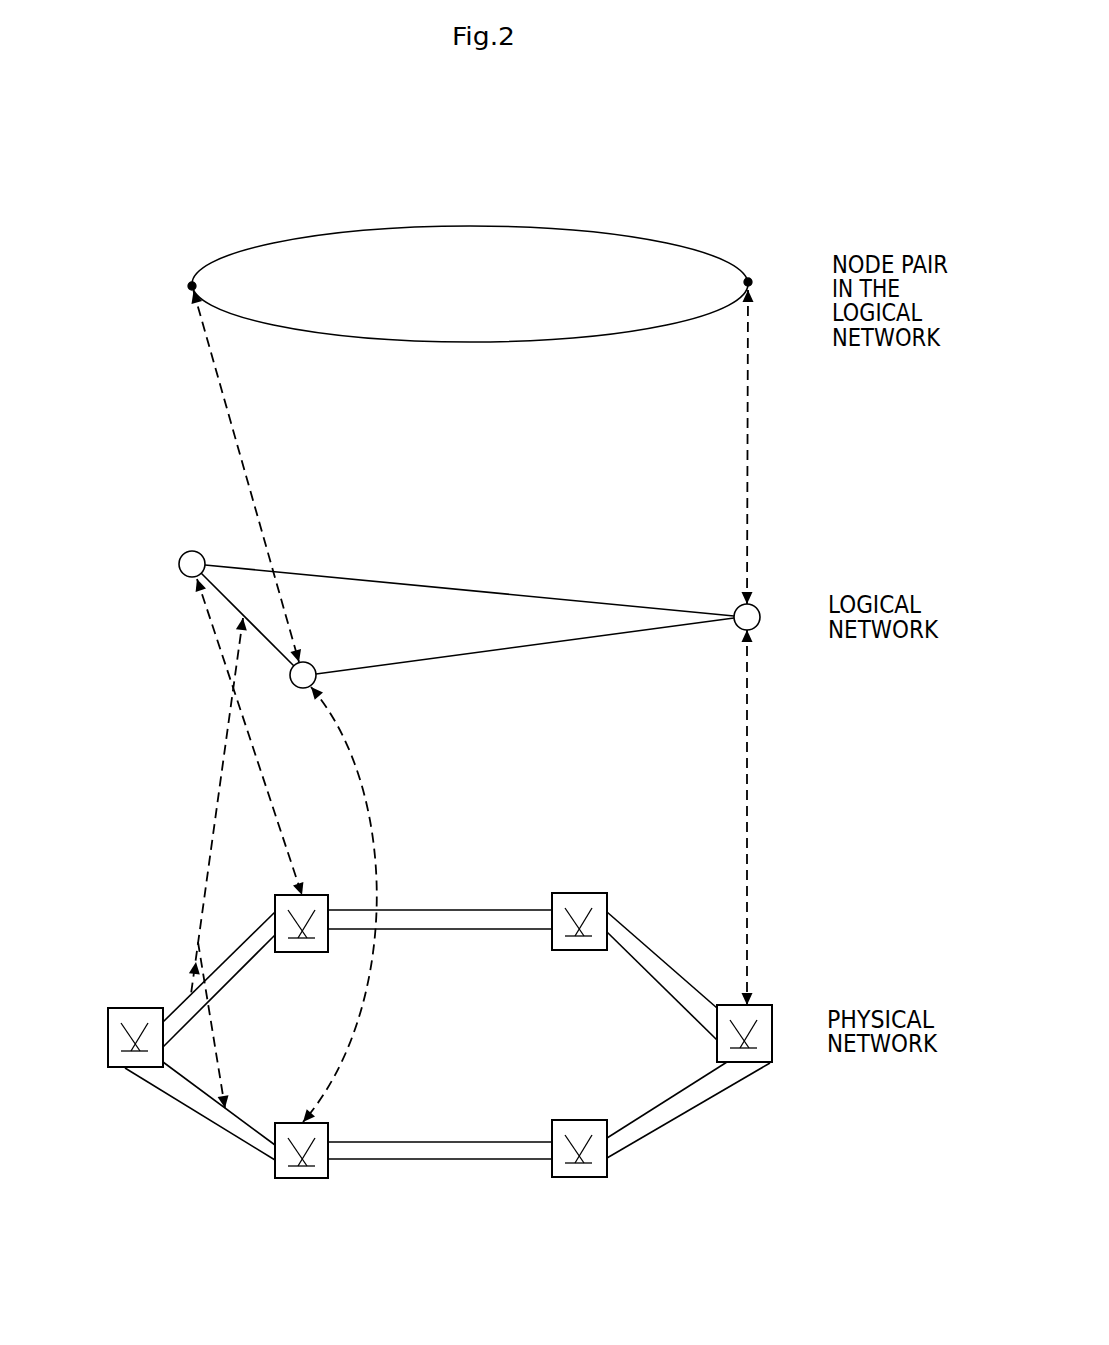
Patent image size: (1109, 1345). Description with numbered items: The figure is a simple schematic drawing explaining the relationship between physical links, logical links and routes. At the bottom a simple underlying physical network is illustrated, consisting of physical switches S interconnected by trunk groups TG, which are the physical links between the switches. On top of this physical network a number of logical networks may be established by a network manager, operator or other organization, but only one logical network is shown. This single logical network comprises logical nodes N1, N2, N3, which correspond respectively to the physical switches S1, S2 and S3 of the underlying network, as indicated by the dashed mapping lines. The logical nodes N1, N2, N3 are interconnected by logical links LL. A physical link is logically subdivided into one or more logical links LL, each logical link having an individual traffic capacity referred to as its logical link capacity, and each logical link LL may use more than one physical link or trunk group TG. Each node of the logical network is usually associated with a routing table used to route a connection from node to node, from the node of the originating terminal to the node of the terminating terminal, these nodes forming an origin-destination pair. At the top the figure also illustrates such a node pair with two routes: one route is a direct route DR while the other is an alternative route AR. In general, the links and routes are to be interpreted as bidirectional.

The alternative route AR is at (453, 227).
The direct route DR is at (463, 343).
The logical links LL is at (230, 605).
The logical node N1 is at (187, 552).
The logical node N2 is at (317, 680).
The logical node N3 is at (738, 627).
The trunk groups TG is at (498, 908).
The physical switch S1 is at (285, 895).
The physical switch S2 is at (275, 1167).
The physical switch S3 is at (770, 1063).
The physical switches S is at (108, 1067).